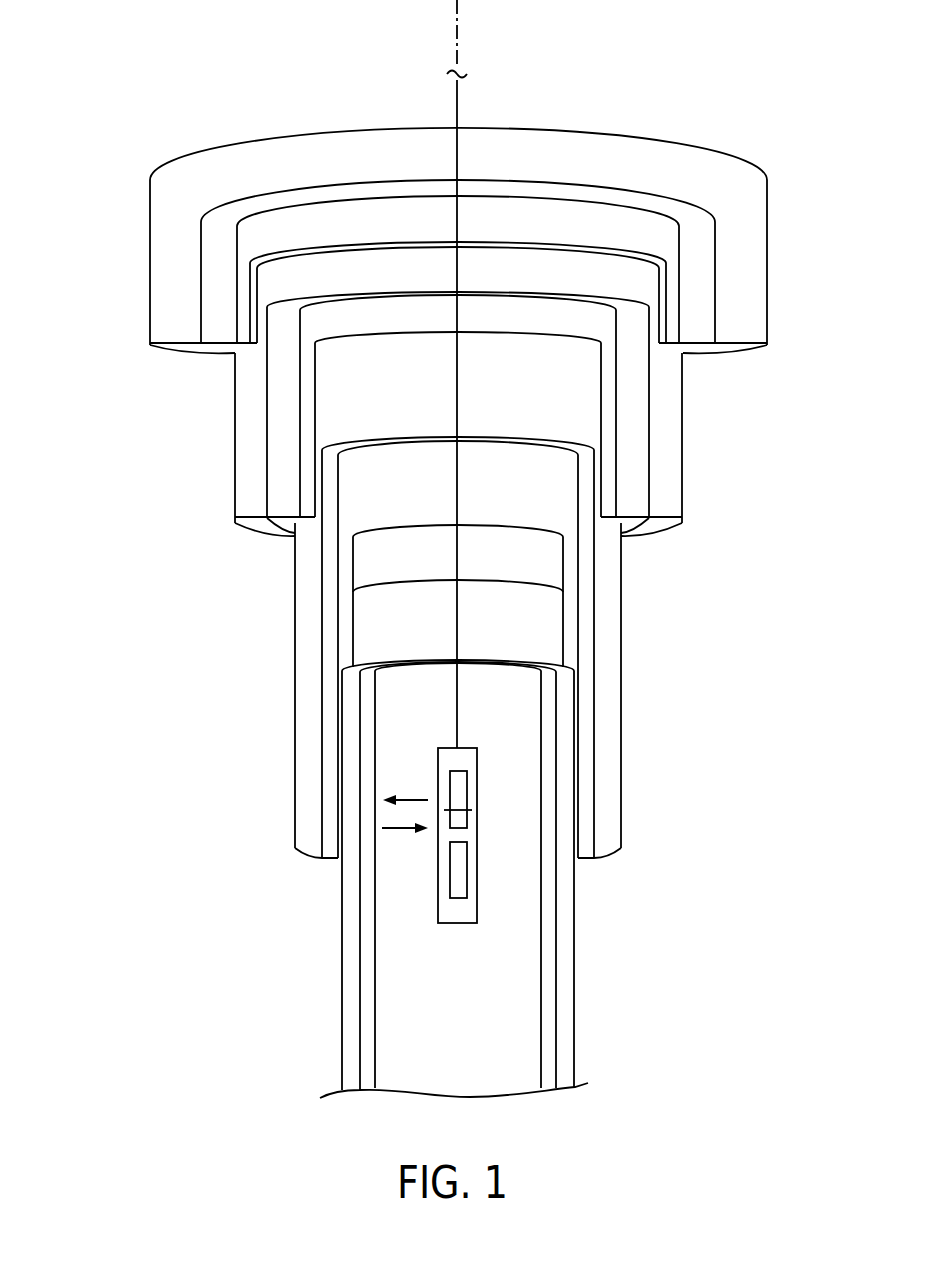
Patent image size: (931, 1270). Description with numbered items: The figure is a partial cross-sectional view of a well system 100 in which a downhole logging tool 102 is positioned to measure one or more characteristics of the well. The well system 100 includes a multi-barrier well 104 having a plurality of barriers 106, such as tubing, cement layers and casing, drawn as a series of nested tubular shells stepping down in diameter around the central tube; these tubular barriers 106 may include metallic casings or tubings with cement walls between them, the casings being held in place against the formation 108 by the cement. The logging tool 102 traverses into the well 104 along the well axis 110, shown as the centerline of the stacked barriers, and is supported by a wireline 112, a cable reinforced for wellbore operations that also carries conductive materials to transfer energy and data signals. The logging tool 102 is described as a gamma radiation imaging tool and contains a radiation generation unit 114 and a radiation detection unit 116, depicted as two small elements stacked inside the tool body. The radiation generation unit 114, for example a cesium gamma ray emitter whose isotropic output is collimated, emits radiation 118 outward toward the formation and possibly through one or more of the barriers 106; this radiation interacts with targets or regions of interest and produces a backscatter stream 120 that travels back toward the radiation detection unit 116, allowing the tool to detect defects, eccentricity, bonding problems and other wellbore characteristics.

The well system 100 is at (654, 61).
The downhole logging tool 102 is at (478, 905).
The multi-barrier well 104 is at (527, 1005).
The barriers 106 is at (158, 290).
The formation 108 is at (810, 780).
The well axis 110 is at (457, 3).
The wireline 112 is at (460, 97).
The radiation generation unit 114 is at (463, 798).
The radiation detection unit 116 is at (463, 867).
The radiation 118 is at (410, 798).
The backscatter stream 120 is at (395, 832).